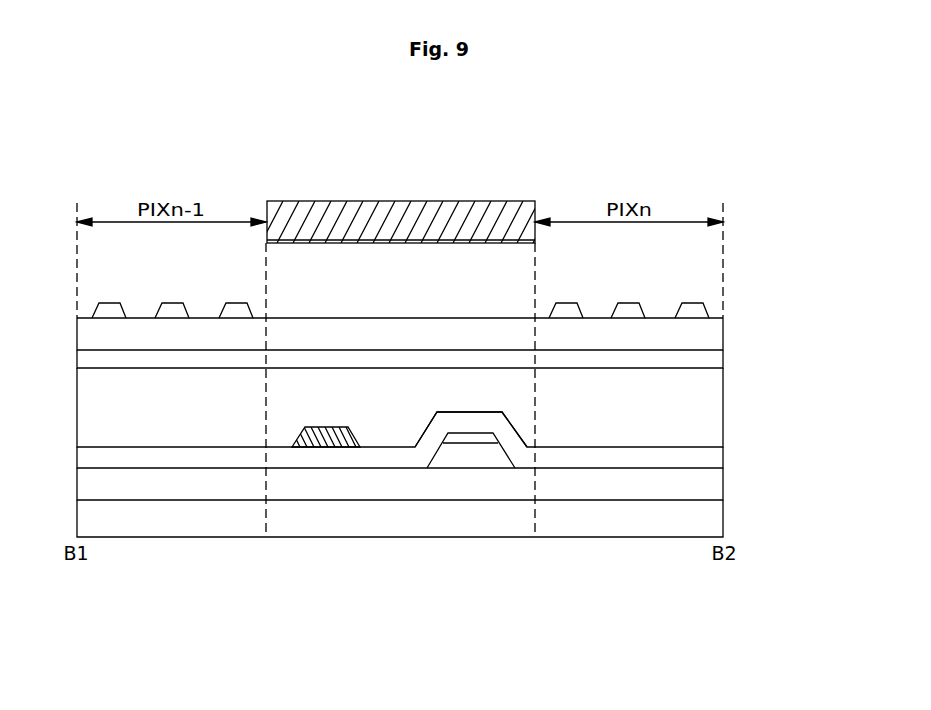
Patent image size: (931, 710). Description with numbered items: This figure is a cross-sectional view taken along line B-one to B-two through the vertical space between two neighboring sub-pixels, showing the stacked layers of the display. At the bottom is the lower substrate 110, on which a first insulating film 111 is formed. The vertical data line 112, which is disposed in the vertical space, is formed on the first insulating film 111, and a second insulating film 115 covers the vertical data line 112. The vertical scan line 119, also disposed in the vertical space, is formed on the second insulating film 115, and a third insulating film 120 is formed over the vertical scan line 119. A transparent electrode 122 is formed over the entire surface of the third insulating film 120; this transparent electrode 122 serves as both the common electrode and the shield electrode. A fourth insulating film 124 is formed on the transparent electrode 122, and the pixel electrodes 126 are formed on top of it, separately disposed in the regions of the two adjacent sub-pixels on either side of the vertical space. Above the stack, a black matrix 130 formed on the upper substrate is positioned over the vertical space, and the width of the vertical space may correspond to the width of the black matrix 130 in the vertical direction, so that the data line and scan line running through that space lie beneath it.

The lower substrate 110 is at (715, 517).
The first insulating film 111 is at (715, 484).
The vertical data line 112 is at (467, 457).
The second insulating film 115 is at (715, 458).
The vertical scan line 119 is at (320, 447).
The third insulating film 120 is at (715, 409).
The transparent electrode 122 is at (715, 362).
The fourth insulating film 124 is at (715, 333).
The pixel electrodes 126 is at (697, 313).
The black matrix 130 is at (398, 212).